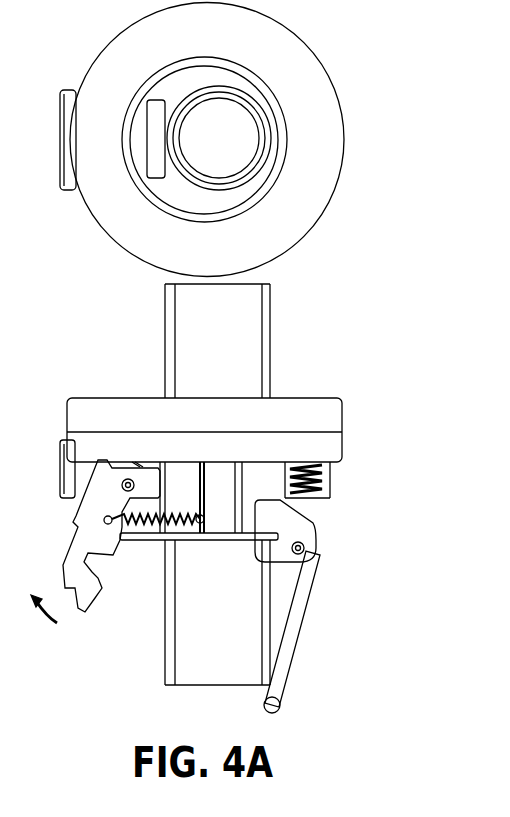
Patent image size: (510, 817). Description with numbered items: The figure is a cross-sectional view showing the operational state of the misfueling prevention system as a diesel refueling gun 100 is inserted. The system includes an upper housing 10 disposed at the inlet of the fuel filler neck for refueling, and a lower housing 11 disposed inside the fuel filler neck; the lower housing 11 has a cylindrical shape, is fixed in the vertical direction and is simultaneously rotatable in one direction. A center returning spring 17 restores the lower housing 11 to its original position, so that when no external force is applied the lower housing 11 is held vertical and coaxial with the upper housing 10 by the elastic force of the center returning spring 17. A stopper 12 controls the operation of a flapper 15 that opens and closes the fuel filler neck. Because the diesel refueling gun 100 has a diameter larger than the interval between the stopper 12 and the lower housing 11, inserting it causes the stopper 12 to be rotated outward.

The upper housing 10 is at (313, 127).
The diesel refueling gun 100 is at (257, 90).
The stopper 12 is at (150, 93).
The lower housing 11 is at (227, 488).
The flapper 15 is at (300, 632).
The center returning spring 17 is at (332, 475).